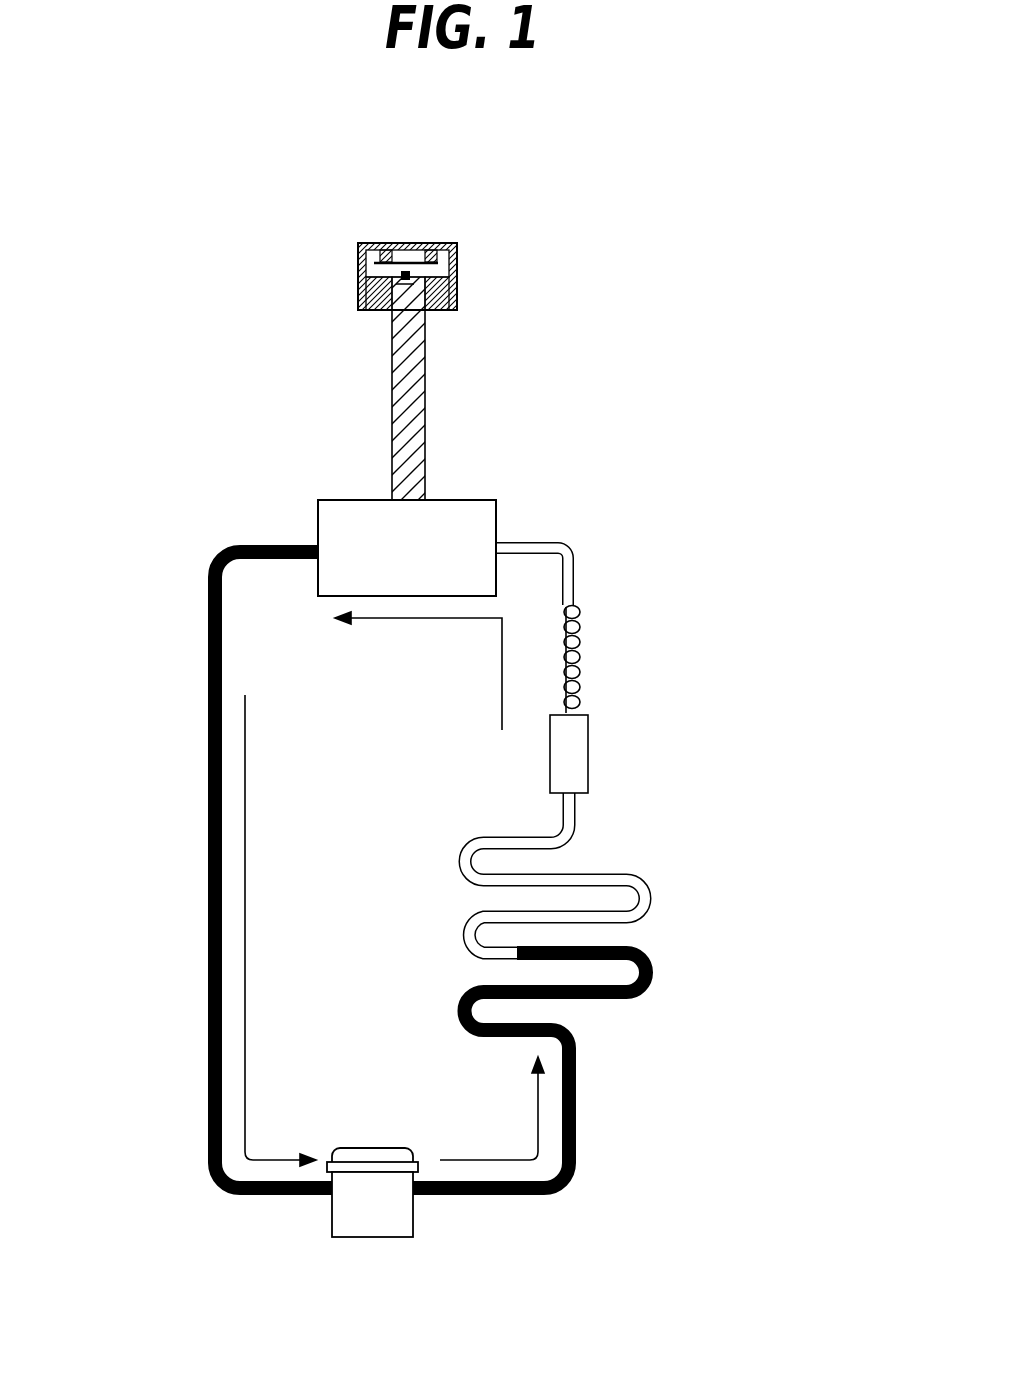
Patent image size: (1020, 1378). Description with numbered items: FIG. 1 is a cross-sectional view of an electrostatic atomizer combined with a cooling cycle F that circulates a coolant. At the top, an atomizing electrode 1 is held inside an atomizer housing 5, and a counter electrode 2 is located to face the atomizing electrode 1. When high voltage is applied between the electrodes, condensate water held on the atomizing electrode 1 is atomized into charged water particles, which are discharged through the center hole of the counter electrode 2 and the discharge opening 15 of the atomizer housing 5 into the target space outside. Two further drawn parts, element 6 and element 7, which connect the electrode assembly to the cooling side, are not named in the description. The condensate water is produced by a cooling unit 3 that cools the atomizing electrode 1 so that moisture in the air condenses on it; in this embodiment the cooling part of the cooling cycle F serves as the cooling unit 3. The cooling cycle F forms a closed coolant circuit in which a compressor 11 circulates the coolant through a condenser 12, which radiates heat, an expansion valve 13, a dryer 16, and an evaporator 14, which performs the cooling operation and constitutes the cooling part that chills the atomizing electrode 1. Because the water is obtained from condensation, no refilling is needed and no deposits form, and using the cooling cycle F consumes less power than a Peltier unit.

The atomizing electrode 1 is at (405, 274).
The counter electrode 2 is at (432, 243).
The cooling unit 3 is at (411, 304).
The atomizer housing 5 is at (363, 273).
The shaft 6 is at (418, 440).
The holder 7 is at (415, 302).
The compressor 11 is at (335, 1213).
The condenser 12 is at (652, 885).
The expansion valve 13 is at (580, 643).
The evaporator 14 is at (352, 507).
The discharge opening 15 is at (410, 243).
The dryer 16 is at (582, 763).
The cooling cycle F is at (180, 551).